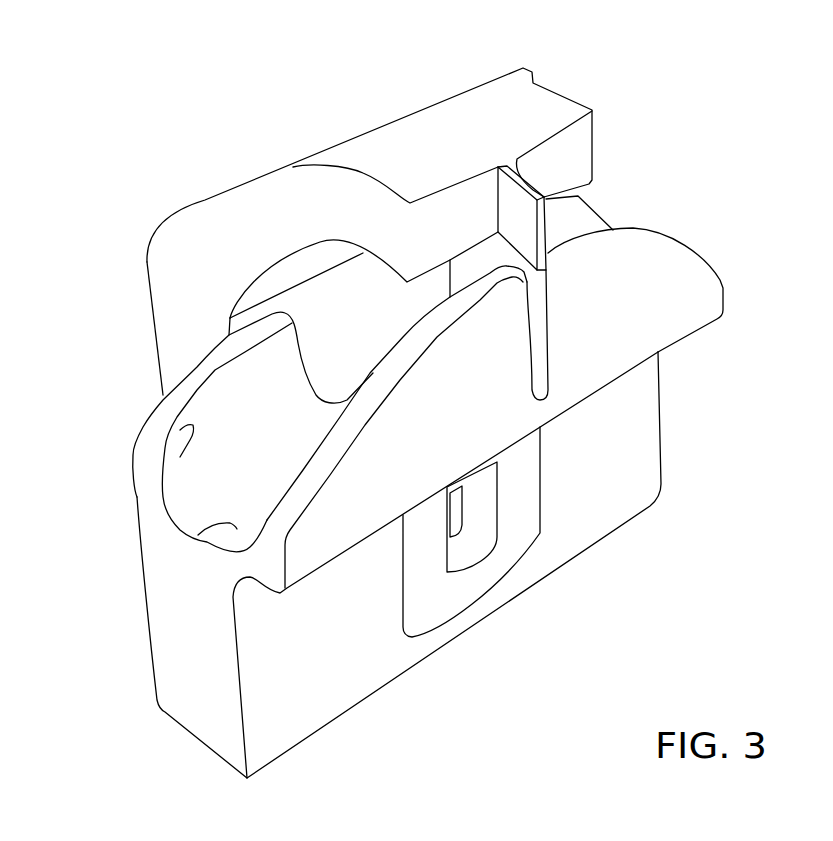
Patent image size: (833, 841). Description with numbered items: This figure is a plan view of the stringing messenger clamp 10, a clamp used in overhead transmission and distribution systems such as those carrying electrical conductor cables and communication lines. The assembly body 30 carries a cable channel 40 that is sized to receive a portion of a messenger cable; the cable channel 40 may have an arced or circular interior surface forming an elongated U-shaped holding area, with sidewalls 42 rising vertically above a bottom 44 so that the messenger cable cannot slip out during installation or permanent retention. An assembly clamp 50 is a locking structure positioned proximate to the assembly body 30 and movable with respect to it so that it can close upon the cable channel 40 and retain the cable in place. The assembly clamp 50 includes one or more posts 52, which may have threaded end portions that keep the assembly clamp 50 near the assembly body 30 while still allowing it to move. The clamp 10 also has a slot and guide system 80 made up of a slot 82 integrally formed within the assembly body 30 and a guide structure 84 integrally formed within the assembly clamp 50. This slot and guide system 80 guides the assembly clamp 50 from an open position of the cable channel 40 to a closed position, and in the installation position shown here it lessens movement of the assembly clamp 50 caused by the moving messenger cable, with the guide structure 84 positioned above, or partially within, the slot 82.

The stringing messenger clamp 10 is at (733, 63).
The assembly body 30 is at (203, 695).
The cable channel 40 is at (205, 480).
The sidewalls 42 is at (192, 428).
The bottom 44 is at (198, 535).
The assembly clamp 50 is at (410, 140).
The posts 52 is at (170, 315).
The slot and guide system 80 is at (568, 275).
The slot 82 is at (541, 305).
The guide structure 84 is at (545, 221).